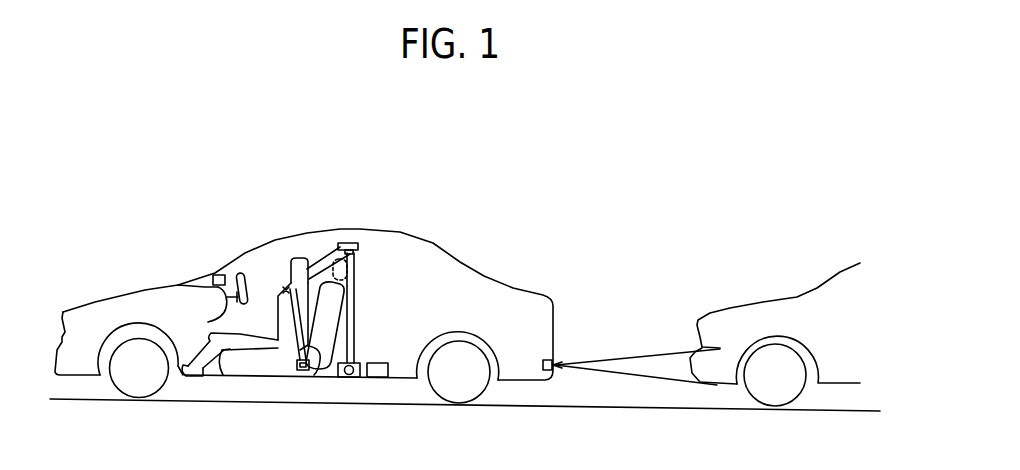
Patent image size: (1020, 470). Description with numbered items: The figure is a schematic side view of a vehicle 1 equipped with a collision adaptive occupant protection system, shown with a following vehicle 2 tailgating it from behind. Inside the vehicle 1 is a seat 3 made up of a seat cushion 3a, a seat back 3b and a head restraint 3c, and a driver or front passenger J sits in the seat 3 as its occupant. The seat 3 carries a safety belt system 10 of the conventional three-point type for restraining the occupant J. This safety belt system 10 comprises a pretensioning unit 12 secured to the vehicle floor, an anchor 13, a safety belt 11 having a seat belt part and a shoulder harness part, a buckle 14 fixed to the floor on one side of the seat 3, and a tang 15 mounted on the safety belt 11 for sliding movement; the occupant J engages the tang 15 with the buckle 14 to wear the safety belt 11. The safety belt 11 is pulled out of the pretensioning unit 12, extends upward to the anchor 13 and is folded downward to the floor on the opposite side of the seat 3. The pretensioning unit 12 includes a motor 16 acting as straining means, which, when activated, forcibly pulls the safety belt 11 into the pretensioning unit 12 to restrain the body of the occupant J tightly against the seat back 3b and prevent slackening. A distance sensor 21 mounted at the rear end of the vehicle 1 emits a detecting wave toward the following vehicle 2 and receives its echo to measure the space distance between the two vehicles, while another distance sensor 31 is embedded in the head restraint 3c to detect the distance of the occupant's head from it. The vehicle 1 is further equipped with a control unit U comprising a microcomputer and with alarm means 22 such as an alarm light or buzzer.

The vehicle 1 is at (487, 273).
The following vehicle 2 is at (784, 291).
The seat 3 is at (290, 345).
The seat cushion 3a is at (242, 368).
The seat back 3b is at (337, 347).
The head restraint 3c is at (350, 273).
The safety belt system 10 is at (343, 316).
The safety belt 11 is at (321, 258).
The pretensioning unit 12 is at (363, 378).
The anchor 13 is at (355, 241).
The buckle 14 is at (298, 372).
The tang 15 is at (287, 365).
The motor 16 is at (342, 378).
The distance sensor 21 is at (553, 360).
The alarm means 22 is at (212, 276).
The distance sensor 31 is at (358, 251).
The occupant J is at (284, 289).
The control unit U is at (388, 397).